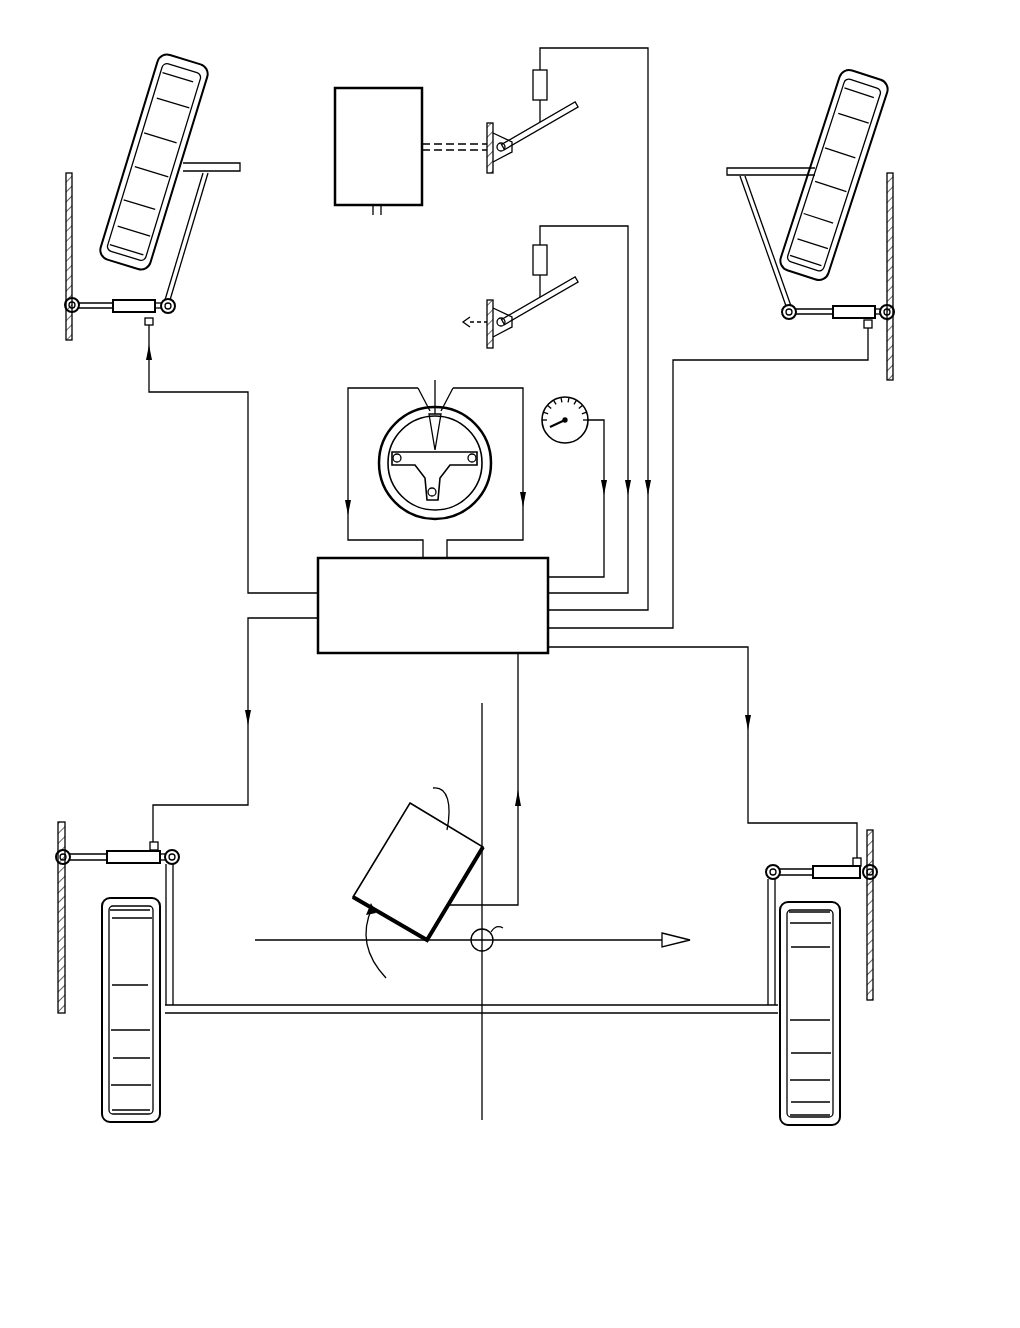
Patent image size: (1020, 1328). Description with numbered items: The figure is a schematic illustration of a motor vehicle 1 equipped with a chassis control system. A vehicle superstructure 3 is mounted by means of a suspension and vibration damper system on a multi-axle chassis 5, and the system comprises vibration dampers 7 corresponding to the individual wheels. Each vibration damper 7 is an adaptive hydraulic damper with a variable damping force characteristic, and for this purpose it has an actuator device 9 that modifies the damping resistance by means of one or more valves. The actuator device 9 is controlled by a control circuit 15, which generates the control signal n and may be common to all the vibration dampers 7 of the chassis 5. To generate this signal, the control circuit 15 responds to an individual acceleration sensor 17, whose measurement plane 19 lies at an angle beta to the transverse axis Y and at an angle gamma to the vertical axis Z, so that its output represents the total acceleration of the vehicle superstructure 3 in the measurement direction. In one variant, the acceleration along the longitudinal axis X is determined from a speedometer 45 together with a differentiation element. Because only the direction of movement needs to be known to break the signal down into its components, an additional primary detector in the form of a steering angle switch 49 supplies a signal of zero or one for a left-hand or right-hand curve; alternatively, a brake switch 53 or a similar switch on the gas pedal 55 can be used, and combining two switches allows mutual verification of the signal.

The motor vehicle 1 is at (700, 517).
The vehicle superstructure 3 is at (895, 275).
The multi-axle chassis 5 is at (744, 140).
The vibration damper 7 is at (834, 318).
The actuator device 9 is at (858, 856).
The control circuit 15 is at (380, 662).
The acceleration sensor 17 is at (346, 908).
The measurement plane 19 is at (425, 888).
The speedometer 45 is at (566, 398).
The steering angle switch 49 is at (432, 392).
The brake switch 53 is at (533, 262).
The gas pedal 55 is at (532, 85).